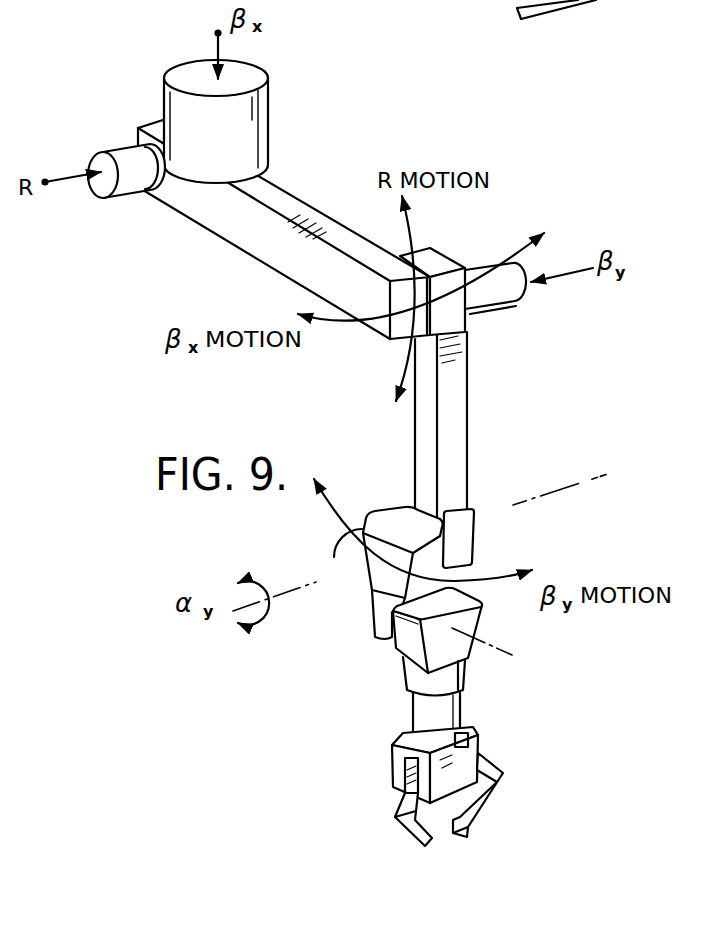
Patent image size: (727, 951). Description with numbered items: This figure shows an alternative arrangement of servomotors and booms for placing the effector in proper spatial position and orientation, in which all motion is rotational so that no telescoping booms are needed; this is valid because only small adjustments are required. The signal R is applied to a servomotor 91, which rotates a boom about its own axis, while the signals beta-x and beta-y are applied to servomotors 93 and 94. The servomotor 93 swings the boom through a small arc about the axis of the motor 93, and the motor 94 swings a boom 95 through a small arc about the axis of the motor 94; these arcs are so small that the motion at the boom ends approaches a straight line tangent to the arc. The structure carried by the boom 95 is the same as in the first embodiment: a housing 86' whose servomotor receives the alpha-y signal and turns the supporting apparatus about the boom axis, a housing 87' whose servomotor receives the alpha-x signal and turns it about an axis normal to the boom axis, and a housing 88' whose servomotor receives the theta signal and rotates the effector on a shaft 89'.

The servomotor 91 is at (118, 147).
The servomotor 93 is at (258, 129).
The servomotor 94 is at (519, 308).
The boom 95 is at (460, 474).
The housing 86' is at (380, 552).
The housing 87' is at (354, 622).
The housing 88' is at (465, 642).
The shaft 89' is at (400, 712).